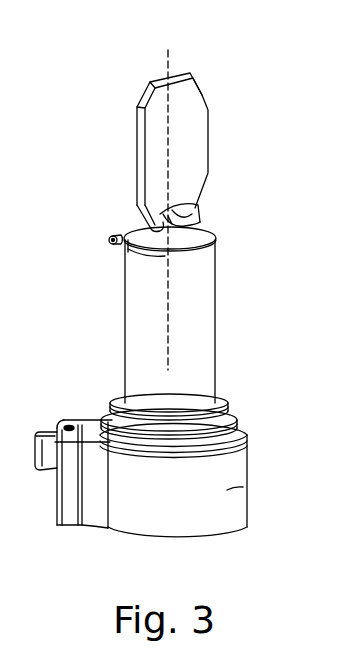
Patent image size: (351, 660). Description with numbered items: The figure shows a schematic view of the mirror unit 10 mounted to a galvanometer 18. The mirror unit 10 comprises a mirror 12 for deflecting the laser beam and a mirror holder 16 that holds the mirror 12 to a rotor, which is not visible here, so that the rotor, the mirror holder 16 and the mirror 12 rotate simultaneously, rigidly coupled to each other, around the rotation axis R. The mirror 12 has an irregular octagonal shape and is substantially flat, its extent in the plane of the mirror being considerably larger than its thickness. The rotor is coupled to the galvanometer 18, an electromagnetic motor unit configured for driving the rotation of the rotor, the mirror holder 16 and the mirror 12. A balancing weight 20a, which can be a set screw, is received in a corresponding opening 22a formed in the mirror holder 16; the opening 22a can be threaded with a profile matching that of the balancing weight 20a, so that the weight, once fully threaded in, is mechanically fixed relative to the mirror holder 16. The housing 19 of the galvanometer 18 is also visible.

The mirror unit 10 is at (134, 71).
The rotation axis R is at (172, 56).
The mirror 12 is at (137, 128).
The mirror holder 16 is at (200, 223).
The balancing weight 20a is at (109, 239).
The opening 22a is at (147, 250).
The galvanometer 18 is at (125, 378).
The housing body 19 is at (245, 470).